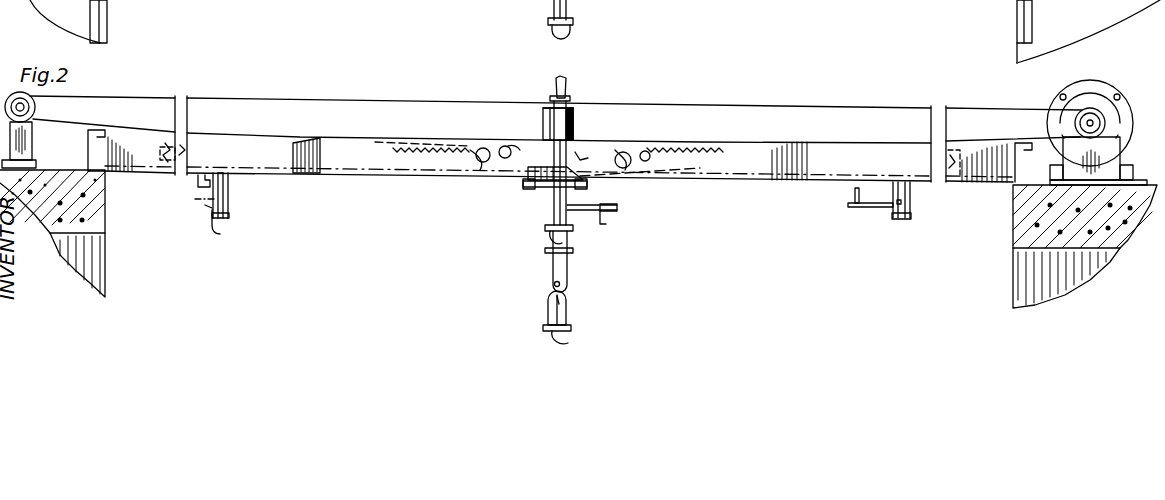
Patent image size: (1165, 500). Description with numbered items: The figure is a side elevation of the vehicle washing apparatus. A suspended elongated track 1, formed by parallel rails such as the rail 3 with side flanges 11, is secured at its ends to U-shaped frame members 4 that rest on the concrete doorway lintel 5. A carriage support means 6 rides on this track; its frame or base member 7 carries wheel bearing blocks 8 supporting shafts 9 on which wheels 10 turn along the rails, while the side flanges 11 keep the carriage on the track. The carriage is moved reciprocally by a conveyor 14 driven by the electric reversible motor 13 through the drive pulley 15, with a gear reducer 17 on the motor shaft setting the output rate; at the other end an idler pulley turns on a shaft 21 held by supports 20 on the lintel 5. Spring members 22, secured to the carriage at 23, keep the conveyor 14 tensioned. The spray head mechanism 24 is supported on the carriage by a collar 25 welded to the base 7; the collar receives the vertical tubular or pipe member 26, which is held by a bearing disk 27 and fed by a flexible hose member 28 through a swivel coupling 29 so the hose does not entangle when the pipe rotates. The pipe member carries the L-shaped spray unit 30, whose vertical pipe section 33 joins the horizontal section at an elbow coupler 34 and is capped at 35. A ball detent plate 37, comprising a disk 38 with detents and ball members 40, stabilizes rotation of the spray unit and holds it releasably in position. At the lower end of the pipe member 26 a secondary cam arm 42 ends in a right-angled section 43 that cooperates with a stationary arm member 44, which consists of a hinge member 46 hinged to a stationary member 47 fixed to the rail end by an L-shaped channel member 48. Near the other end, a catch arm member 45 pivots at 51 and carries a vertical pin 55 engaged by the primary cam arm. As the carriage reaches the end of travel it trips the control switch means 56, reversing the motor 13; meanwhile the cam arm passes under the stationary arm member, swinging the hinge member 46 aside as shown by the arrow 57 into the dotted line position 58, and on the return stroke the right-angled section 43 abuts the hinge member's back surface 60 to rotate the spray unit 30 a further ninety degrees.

The elongated track 1 is at (712, 182).
The rail 3 is at (363, 190).
The U-shaped frame member 4 is at (96, 148).
The concrete doorway lintel 5 is at (100, 194).
The carriage support means 6 is at (695, 178).
The frame or base member 7 is at (581, 158).
The wheel bearing block 8 is at (503, 150).
The shaft 9 is at (482, 145).
The wheel 10 is at (480, 170).
The side flange 11 is at (283, 145).
The electric reversible motor 13 is at (1062, 86).
The conveyor 14 is at (848, 107).
The drive pulley 15 is at (1092, 118).
The gear reducer 17 is at (1093, 115).
The support 20 is at (30, 138).
The shaft 21 is at (18, 92).
The spring member 22 is at (446, 138).
The spring securing point 23 is at (480, 147).
The spray head mechanism 24 is at (577, 103).
The collar 25 is at (574, 120).
The vertical tubular or pipe member 26 is at (552, 101).
The bearing disk 27 is at (545, 110).
The flexible hose member 28 is at (560, 78).
The swivel coupling 29 is at (570, 100).
The L-shaped spray unit 30 is at (548, 252).
The vertical pipe section 33 is at (566, 312).
The elbow coupler 34 is at (553, 31).
The cap 35 is at (568, 343).
The ball detent plate 37 is at (523, 185).
The disk with detents 38 is at (587, 190).
The ball member 40 is at (551, 161).
The secondary cam arm 42 is at (617, 223).
The right-angled section 43 is at (618, 205).
The stationary arm member 44 is at (228, 188).
The catch arm member 45 is at (896, 220).
The hinge member 46 is at (229, 216).
The stationary member 47 is at (219, 173).
The L-shaped channel member 48 is at (200, 182).
The pivot 51 is at (912, 212).
The vertical pin 55 is at (855, 195).
The control switch means 56 is at (165, 122).
The arrow 57 is at (205, 205).
The dotted line position 58 is at (195, 199).
The spring 60 is at (226, 232).